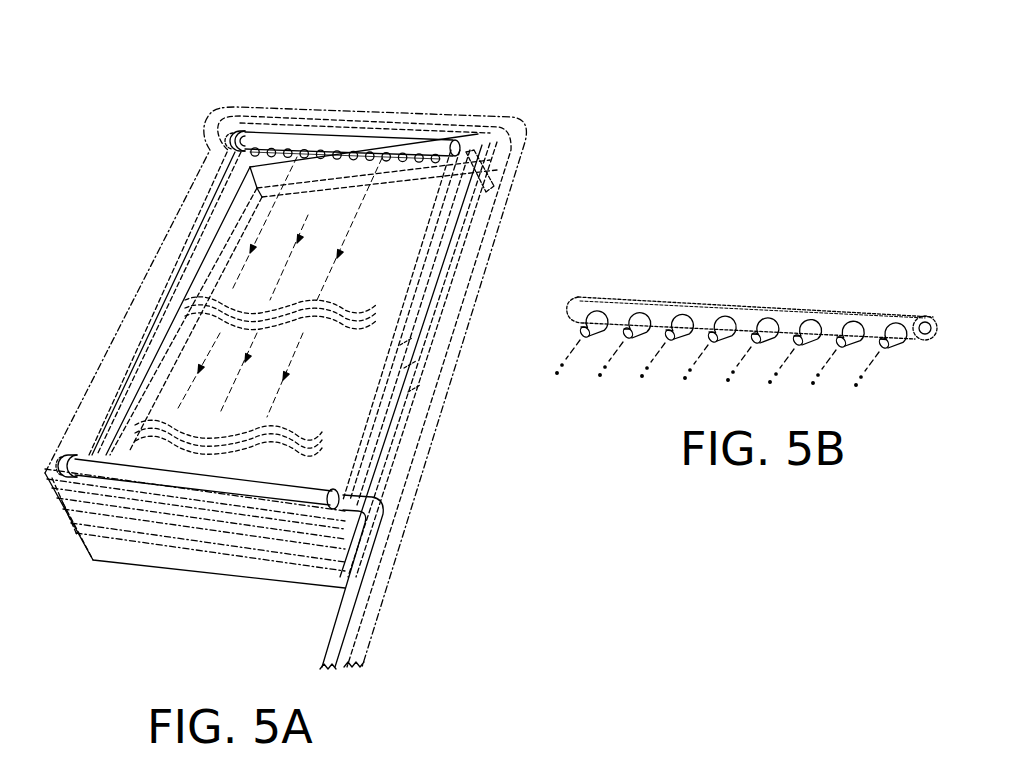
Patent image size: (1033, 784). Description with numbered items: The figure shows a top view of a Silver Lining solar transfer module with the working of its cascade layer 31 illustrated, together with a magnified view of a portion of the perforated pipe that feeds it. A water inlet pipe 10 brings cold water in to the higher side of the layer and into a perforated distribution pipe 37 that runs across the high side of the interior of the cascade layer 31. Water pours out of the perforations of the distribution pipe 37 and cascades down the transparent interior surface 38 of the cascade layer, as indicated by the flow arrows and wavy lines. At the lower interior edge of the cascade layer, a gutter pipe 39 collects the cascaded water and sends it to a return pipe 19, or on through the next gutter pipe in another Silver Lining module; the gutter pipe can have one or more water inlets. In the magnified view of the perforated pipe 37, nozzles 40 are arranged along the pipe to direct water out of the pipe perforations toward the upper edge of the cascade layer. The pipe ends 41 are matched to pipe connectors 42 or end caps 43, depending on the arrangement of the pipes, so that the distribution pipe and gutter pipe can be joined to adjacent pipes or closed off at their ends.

In FIG. 5A, the water inlet pipe 10 is at (400, 121).
In FIG. 5A, the return pipe 19 is at (345, 610).
In FIG. 5A, the cascade layer 31 is at (342, 236).
In FIG. 5A, the perforated distribution pipe 37 is at (293, 143).
In FIG. 5A, the transparent interior surface 38 is at (410, 243).
In FIG. 5A, the gutter pipe 39 is at (201, 480).
In FIG. 5B, the nozzles 40 is at (630, 320).
In FIG. 5B, the pipe ends 41 is at (921, 324).
In FIG. 5A, the pipe connectors 42 is at (228, 134).
In FIG. 5A, the end caps 43 is at (70, 475).